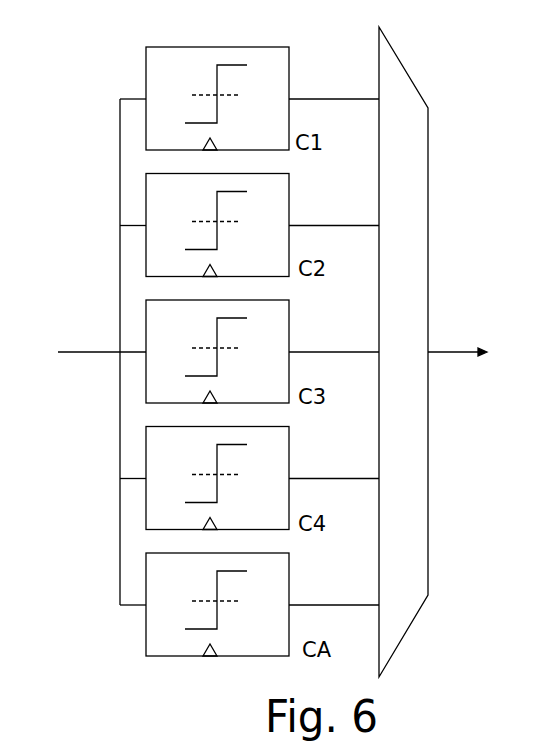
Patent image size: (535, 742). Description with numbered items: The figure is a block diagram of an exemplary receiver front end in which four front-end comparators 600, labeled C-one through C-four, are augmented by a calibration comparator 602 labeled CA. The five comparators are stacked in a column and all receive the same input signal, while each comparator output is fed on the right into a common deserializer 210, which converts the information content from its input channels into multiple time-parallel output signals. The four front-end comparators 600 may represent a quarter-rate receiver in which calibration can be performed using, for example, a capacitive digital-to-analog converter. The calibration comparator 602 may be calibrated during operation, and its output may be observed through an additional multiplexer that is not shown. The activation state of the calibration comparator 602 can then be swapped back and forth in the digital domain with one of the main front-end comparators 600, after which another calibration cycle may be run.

The front-end comparators 600 is at (147, 58).
The calibration comparator 602 is at (289, 567).
The deserializer 210 is at (403, 63).